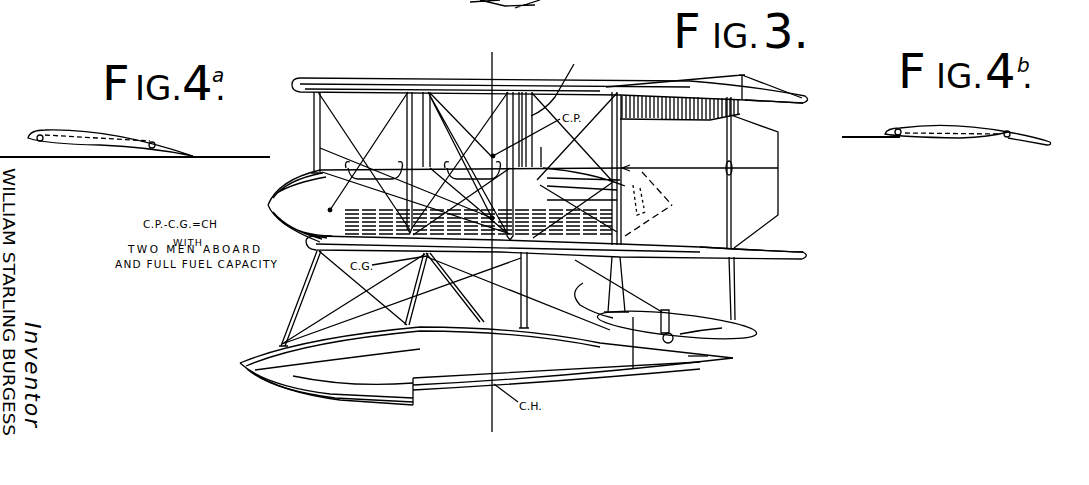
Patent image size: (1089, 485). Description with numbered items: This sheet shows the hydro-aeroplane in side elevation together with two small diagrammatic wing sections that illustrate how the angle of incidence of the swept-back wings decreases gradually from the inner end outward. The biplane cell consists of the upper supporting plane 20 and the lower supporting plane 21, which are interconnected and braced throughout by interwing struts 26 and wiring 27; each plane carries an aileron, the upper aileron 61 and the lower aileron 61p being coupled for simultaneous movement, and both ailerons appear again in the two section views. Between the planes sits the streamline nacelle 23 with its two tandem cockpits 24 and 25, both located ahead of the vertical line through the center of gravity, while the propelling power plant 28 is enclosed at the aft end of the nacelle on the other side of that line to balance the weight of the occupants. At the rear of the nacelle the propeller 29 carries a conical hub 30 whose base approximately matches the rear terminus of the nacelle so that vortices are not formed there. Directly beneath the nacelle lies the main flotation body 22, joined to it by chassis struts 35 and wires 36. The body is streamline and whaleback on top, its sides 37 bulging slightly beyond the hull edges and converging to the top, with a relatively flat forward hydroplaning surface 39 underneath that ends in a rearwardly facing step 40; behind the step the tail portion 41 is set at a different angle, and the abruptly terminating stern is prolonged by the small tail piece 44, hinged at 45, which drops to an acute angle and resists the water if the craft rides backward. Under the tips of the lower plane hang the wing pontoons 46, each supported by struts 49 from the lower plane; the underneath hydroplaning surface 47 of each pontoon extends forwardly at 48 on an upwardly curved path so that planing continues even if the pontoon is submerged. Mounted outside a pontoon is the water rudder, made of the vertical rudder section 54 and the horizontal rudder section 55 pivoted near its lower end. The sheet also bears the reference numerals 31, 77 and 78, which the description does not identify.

In FIG. 3, the upper supporting plane 20 is at (387, 69).
In FIG. 4A, the upper supporting plane 20 is at (78, 132).
In FIG. 4B, the upper supporting plane 20 is at (950, 126).
In FIG. 3, the lower supporting plane 21 is at (362, 227).
In FIG. 3, the main flotation body 22 is at (263, 345).
In FIG. 3, the nacelle 23 is at (284, 183).
In FIG. 3, the cockpit 24 is at (374, 168).
In FIG. 3, the cockpit 25 is at (480, 172).
In FIG. 3, the interwing struts 26 is at (311, 112).
In FIG. 3, the wiring 27 is at (330, 106).
In FIG. 3, the propelling power plant 28 is at (622, 153).
In FIG. 3, the propeller 29 is at (660, 168).
In FIG. 3, the conical hub 30 is at (668, 199).
In FIG. 3, the propeller 31 is at (765, 146).
In FIG. 3, the chassis struts 35 is at (297, 293).
In FIG. 3, the wires 36 is at (362, 284).
In FIG. 3, the sides 37 is at (338, 356).
In FIG. 3, the hydroplaning surface 39 is at (350, 392).
In FIG. 3, the step 40 is at (414, 397).
In FIG. 3, the tail portion 41 is at (598, 381).
In FIG. 3, the tail piece 44 is at (699, 362).
In FIG. 3, the hinge 45 is at (688, 362).
In FIG. 3, the wing pontoons 46 is at (706, 316).
In FIG. 3, the underneath hydroplaning surface 47 is at (634, 340).
In FIG. 3, the forward extension 48 is at (591, 291).
In FIG. 3, the struts 49 is at (618, 274).
In FIG. 3, the vertical rudder section 54 is at (722, 338).
In FIG. 3, the horizontal rudder section 55 is at (682, 338).
In FIG. 3, the aileron 61 is at (803, 98).
In FIG. 3, the aileron 61p is at (802, 252).
In FIG. 4B, the aileron 61p is at (1014, 138).
In FIG. 3, the intermediate hull strut 77 is at (520, 294).
In FIG. 3, the windshield / fairing 78 is at (563, 80).